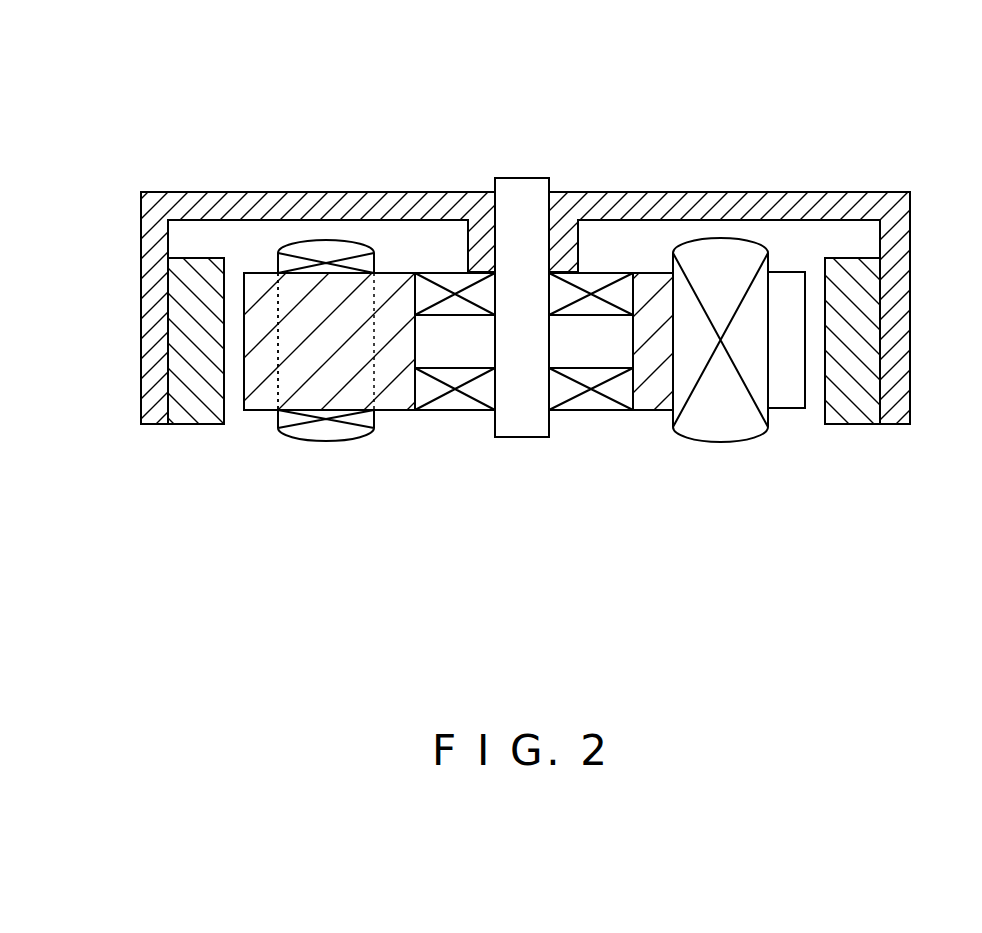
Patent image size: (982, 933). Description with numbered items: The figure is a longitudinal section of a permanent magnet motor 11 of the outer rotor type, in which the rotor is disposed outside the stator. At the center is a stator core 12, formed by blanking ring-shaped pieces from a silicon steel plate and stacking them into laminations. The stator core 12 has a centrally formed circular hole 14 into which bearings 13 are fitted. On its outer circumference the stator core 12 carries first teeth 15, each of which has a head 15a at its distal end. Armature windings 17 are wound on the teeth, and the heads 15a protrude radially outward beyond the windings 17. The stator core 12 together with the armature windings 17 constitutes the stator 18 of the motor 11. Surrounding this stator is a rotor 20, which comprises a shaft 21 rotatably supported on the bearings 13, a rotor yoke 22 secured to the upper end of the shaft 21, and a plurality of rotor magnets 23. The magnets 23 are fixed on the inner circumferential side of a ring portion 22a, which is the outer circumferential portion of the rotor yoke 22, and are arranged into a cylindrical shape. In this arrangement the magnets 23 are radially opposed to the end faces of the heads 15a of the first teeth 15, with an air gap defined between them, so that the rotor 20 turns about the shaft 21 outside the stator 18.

The permanent magnet motor 11 is at (835, 193).
The stator core 12 is at (398, 272).
The bearings 13 is at (448, 275).
The circular hole 14 is at (421, 388).
The first teeth 15 is at (333, 390).
The head 15a is at (253, 405).
The armature windings 17 is at (297, 440).
The stator 18 is at (653, 258).
The rotor 20 is at (588, 182).
The shaft 21 is at (513, 193).
The rotor yoke 22 is at (303, 193).
The ring portion 22a is at (141, 298).
The rotor magnets 23 is at (197, 262).